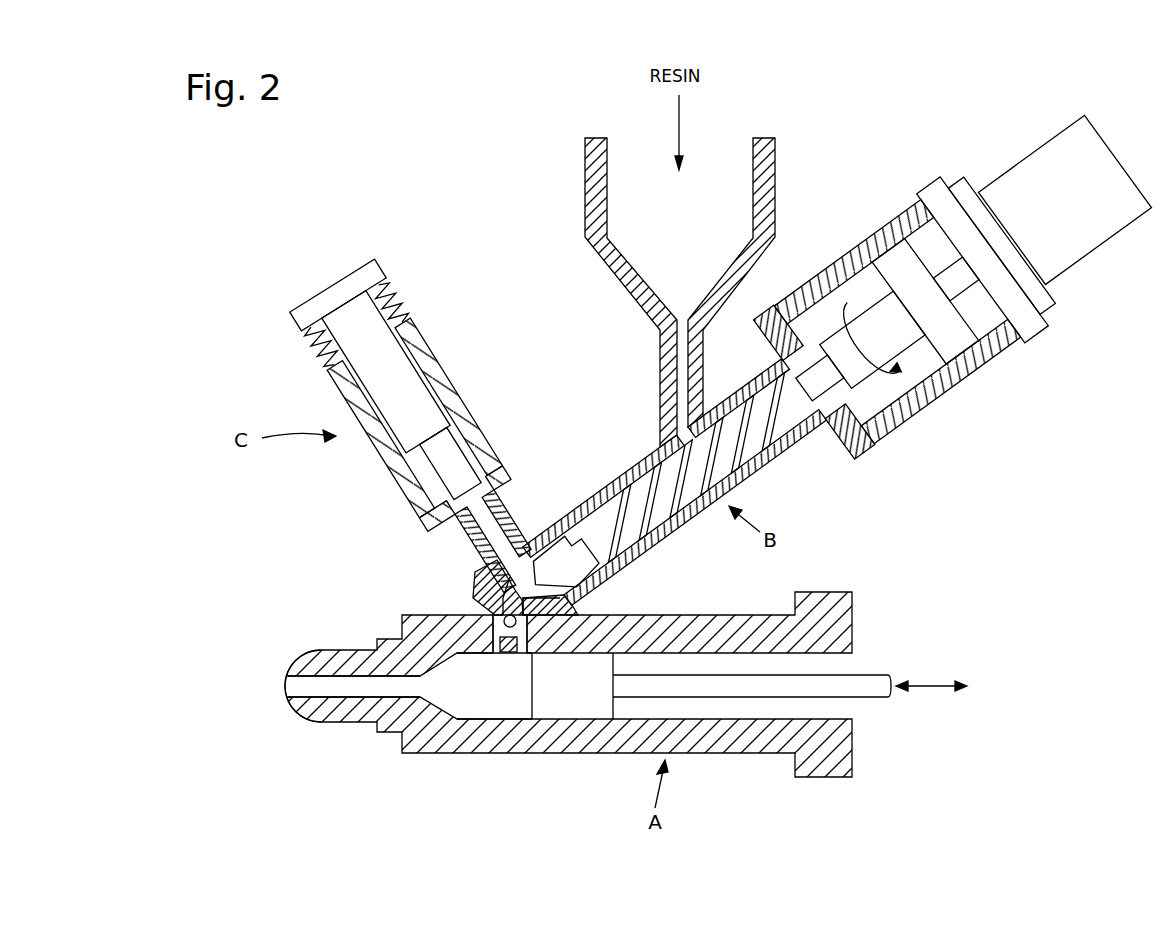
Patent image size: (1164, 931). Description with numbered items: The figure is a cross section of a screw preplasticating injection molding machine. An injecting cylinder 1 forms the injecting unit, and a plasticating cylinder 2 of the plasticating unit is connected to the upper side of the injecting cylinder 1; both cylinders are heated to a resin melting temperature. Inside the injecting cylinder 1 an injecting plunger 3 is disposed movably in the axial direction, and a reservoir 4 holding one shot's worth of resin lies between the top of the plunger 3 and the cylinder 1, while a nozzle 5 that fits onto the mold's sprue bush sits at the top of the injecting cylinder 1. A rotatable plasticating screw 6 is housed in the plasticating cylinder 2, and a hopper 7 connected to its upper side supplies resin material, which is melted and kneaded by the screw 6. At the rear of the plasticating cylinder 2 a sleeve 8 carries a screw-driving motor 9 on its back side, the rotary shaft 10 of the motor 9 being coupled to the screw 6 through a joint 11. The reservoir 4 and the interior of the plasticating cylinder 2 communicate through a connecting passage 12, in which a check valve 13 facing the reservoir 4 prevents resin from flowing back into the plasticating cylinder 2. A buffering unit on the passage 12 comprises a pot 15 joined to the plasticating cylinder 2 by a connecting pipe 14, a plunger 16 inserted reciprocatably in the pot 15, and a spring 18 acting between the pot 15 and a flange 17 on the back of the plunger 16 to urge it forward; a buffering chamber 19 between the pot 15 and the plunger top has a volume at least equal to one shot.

The injecting cylinder 1 is at (723, 757).
The plasticating cylinder 2 is at (770, 463).
The injecting plunger 3 is at (573, 707).
The reservoir 4 is at (495, 713).
The nozzle 5 is at (318, 703).
The plasticating screw 6 is at (630, 520).
The hopper 7 is at (597, 178).
The sleeve 8 is at (920, 407).
The screw-driving motor 9 is at (1078, 240).
The rotary shaft 10 is at (932, 305).
The joint 11 is at (880, 312).
The connecting passage 12 is at (487, 593).
The check valve 13 is at (502, 637).
The connecting pipe 14 is at (500, 503).
The pot 15 is at (457, 385).
The plunger 16 is at (393, 373).
The flange 17 is at (327, 293).
The spring 18 is at (387, 292).
The buffering chamber 19 is at (432, 453).